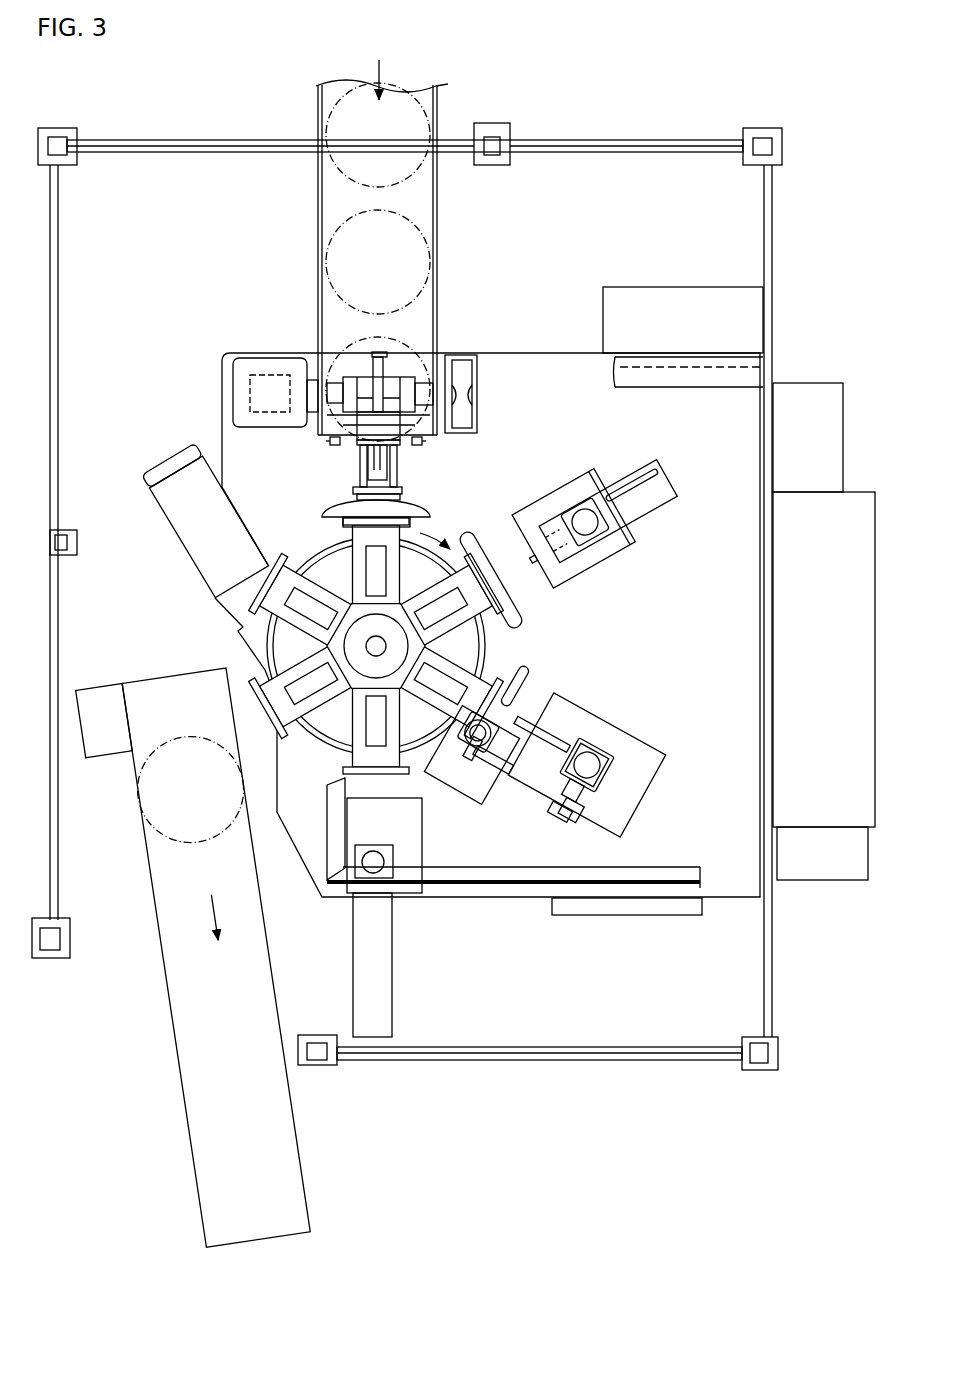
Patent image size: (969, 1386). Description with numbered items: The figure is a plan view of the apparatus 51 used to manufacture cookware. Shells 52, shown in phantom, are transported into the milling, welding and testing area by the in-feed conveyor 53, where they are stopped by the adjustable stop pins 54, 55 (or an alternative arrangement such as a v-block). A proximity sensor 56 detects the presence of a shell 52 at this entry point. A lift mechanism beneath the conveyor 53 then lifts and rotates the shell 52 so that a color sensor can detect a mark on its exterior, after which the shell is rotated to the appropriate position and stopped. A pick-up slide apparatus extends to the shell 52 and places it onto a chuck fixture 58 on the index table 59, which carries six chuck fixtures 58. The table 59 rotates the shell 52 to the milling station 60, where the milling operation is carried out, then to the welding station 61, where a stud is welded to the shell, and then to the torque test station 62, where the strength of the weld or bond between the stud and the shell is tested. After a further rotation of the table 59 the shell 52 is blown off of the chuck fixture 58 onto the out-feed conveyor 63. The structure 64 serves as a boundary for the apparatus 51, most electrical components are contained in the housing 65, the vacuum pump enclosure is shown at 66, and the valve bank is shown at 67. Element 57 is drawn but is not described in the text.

The apparatus 51 is at (586, 97).
The shells 52 is at (318, 177).
The in-feed conveyor 53 is at (316, 106).
The adjustable stop pin 54 is at (336, 442).
The adjustable stop pin 55 is at (420, 442).
The proximity sensor 56 is at (368, 463).
The transfer plate 57 is at (408, 492).
The chuck fixture 58 is at (344, 531).
The index table 59 is at (490, 651).
The milling station 60 is at (569, 468).
The welding station 61 is at (583, 699).
The torque test station 62 is at (431, 828).
The out-feed conveyor 63 is at (150, 900).
The structure 64 is at (172, 138).
The housing 65 is at (860, 492).
The vacuum pump enclosure 66 is at (627, 916).
The valve bank 67 is at (640, 287).